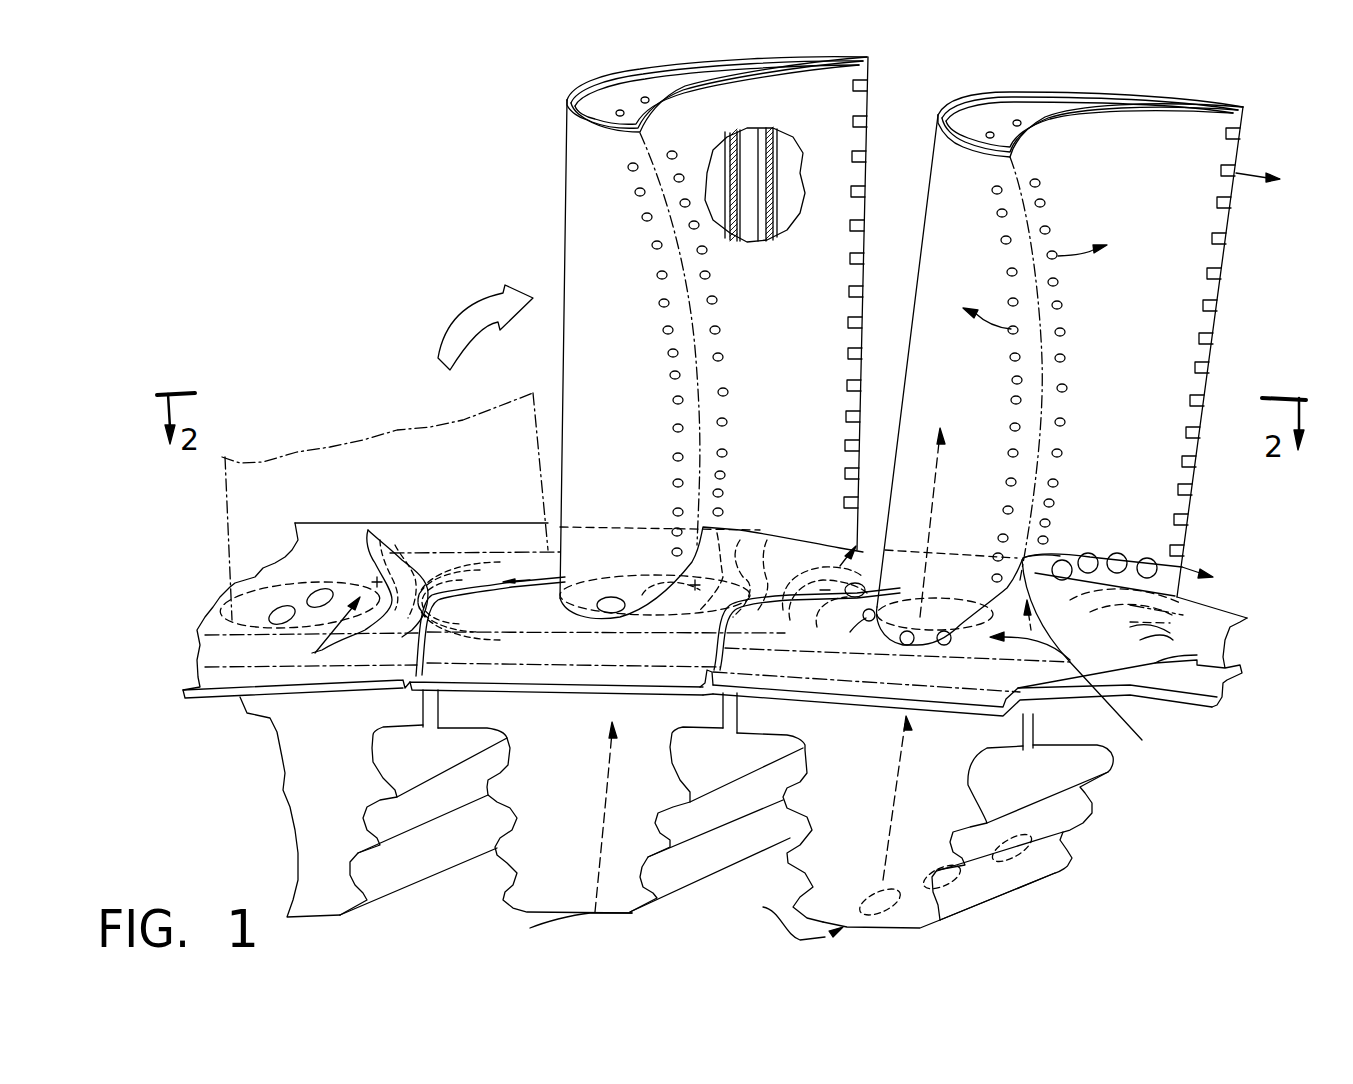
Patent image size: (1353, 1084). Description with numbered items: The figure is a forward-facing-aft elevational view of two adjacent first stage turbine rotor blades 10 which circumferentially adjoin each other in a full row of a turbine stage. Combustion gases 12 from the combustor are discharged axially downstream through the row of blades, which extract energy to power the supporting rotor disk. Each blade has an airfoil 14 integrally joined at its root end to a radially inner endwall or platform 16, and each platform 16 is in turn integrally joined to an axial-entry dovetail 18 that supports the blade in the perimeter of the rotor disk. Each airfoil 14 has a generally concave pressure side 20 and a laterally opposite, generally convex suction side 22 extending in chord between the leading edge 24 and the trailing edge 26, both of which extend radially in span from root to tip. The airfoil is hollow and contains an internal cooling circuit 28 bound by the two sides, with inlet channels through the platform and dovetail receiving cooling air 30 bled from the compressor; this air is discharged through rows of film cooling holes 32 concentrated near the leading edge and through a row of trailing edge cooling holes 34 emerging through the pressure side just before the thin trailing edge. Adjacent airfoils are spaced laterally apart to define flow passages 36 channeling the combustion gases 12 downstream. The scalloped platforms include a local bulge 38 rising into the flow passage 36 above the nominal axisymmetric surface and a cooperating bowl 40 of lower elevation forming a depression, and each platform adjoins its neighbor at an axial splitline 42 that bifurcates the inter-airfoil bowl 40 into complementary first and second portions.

The first stage turbine rotor blades 10 is at (507, 180).
The combustion gases 12 is at (480, 310).
The airfoil 14 is at (240, 462).
The platform 16 is at (203, 630).
The axial-entry dovetail 18 is at (500, 855).
The pressure side 20 is at (795, 412).
The suction side 22 is at (622, 354).
The leading edge 24 is at (697, 322).
The trailing edge 26 is at (866, 170).
The internal cooling circuit 28 is at (745, 157).
The cooling air 30 is at (1056, 257).
The film cooling holes 32 is at (1065, 333).
The trailing edge cooling holes 34 is at (1192, 397).
The flow passages 36 is at (821, 438).
The bulge 38 is at (314, 629).
The bowl 40 is at (480, 592).
The axial splitline 42 is at (418, 643).